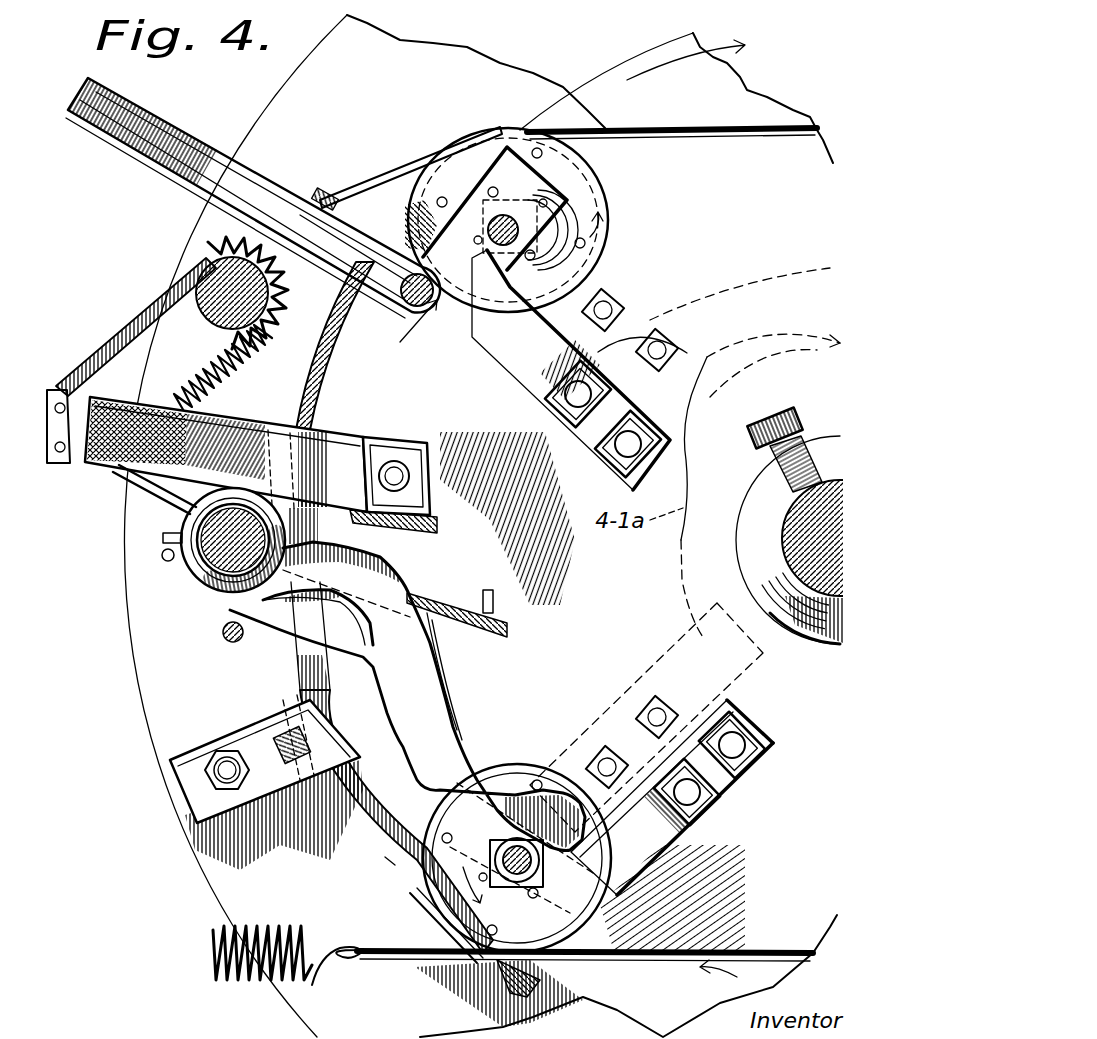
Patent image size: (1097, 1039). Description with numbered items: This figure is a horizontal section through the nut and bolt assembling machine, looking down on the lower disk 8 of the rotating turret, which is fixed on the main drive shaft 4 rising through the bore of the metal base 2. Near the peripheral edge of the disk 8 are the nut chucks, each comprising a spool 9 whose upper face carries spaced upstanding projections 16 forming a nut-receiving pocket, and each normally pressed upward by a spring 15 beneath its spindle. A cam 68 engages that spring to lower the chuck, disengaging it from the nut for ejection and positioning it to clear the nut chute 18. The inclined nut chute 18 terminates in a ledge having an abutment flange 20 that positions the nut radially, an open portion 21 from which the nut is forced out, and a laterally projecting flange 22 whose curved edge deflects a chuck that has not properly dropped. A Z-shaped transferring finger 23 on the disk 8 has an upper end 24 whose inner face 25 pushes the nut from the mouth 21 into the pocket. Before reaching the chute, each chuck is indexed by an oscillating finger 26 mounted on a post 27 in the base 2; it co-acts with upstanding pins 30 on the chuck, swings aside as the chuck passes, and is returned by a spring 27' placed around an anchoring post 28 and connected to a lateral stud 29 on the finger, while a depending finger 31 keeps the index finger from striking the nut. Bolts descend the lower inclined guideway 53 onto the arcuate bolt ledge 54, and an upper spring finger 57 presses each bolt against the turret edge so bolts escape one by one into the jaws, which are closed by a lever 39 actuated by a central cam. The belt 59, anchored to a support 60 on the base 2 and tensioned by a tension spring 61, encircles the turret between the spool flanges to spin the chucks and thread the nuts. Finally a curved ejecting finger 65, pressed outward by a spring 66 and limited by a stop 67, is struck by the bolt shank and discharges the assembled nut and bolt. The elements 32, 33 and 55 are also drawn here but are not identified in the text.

The metal base 2 is at (299, 92).
The main drive shaft 4 is at (783, 548).
The lower disk 8 is at (715, 77).
The spool 9 is at (585, 198).
The spring 15 is at (425, 225).
The upstanding projections 16 is at (535, 258).
The nut chute 18 is at (228, 425).
The abutment flange 20 is at (407, 478).
The open portion of the ledge 21 is at (362, 443).
The laterally projecting flange 22 is at (430, 518).
The Z-shaped transferring finger 23 is at (598, 447).
The upper end of transferring finger 24 is at (545, 340).
The inner face of upper end 25 is at (548, 272).
The oscillating finger 26 is at (493, 638).
The post 27 is at (172, 565).
The spring 27' is at (212, 369).
The anchoring post 28 is at (215, 300).
The lateral stud 29 is at (150, 487).
The upstanding pins 30 is at (542, 153).
The depending finger 31 is at (490, 590).
The stud 32 is at (168, 557).
The lug 33 is at (163, 538).
The lever 39 is at (745, 292).
The lower inclined guideway 53 is at (155, 122).
The bolt ledge 54 is at (420, 335).
The direction arrow 55 is at (605, 213).
The upper spring finger 57 is at (358, 222).
The belt 59 is at (680, 130).
The support 60 is at (55, 387).
The tension spring 61 is at (250, 930).
The ejecting finger 65 is at (445, 745).
The spring 66 is at (205, 597).
The stop 67 is at (235, 643).
The cam 68 is at (442, 197).